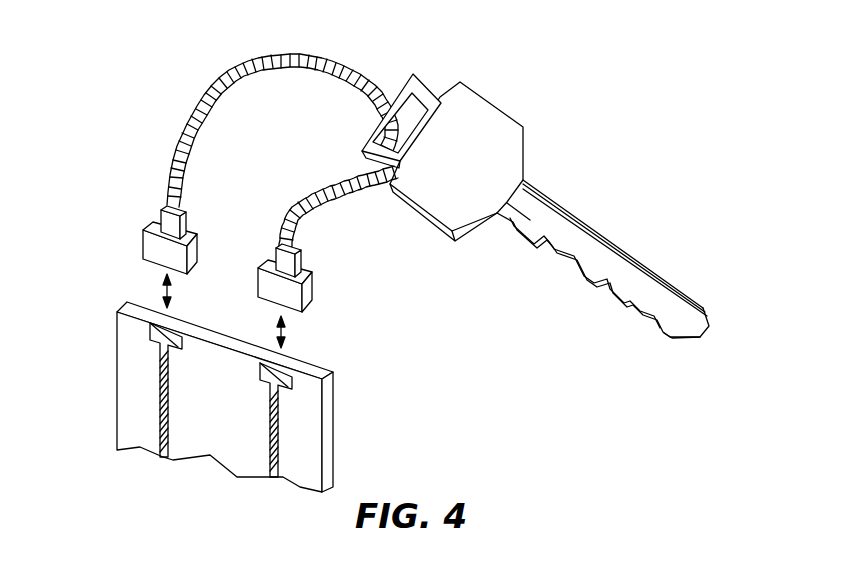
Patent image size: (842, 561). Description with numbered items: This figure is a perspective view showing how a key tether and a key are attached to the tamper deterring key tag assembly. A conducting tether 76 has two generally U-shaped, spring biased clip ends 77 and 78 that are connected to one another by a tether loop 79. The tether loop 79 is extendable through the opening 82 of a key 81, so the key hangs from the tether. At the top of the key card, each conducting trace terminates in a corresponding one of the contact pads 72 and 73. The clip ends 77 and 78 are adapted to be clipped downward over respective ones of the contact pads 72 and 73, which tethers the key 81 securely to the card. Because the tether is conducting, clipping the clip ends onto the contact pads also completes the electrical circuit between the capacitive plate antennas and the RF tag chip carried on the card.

The contact pad 72 is at (158, 340).
The contact pad 73 is at (282, 395).
The conducting tether 76 is at (369, 52).
The clip end 77 is at (160, 250).
The clip end 78 is at (297, 305).
The tether loop 79 is at (290, 63).
The key 81 is at (493, 137).
The opening 82 is at (418, 112).